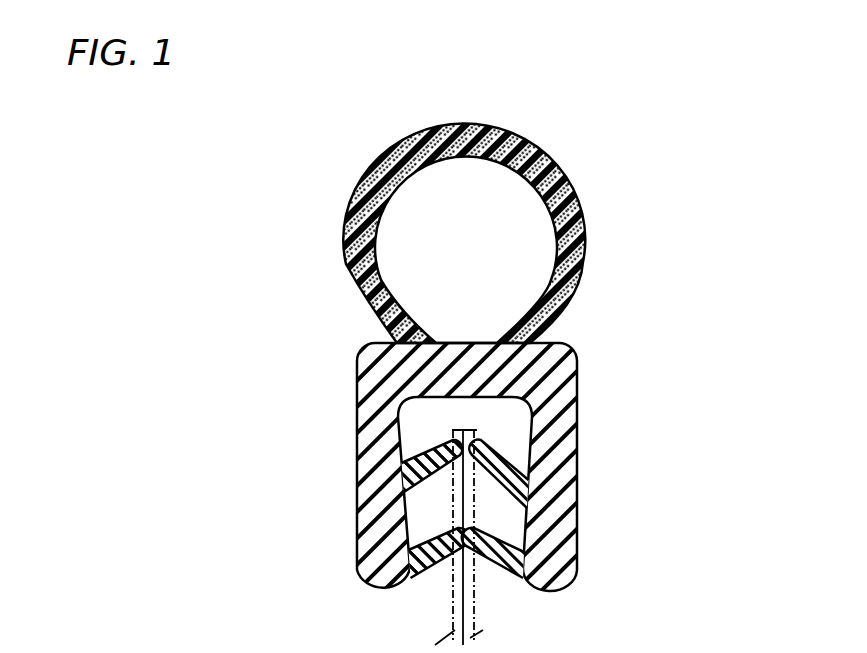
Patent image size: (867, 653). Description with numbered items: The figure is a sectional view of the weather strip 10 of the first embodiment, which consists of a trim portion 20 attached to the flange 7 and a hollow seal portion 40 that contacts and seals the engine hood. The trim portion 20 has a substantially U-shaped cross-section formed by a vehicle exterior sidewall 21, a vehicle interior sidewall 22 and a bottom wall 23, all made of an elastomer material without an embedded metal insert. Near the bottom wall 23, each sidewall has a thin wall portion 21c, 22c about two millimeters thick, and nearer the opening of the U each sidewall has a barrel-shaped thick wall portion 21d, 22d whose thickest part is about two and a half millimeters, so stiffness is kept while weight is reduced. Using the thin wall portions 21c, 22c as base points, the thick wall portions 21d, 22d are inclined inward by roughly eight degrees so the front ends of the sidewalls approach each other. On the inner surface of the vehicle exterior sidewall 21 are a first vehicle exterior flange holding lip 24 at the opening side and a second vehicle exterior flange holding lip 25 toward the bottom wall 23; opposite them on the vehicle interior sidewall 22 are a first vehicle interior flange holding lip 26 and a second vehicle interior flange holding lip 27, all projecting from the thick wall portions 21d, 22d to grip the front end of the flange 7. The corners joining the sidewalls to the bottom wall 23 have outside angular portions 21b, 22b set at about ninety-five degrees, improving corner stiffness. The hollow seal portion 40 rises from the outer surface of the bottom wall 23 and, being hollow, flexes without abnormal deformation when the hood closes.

The weather strip 10 is at (320, 170).
The hollow seal portion 40 is at (577, 200).
The trim portion 20 is at (340, 391).
The vehicle exterior sidewall 21 is at (357, 452).
The angular portion 21b is at (360, 362).
The thin wall portion 21c is at (386, 418).
The thick wall portion 21d is at (388, 523).
The vehicle interior sidewall 22 is at (575, 484).
The angular portion 22b is at (572, 370).
The thin wall portion 22c is at (550, 424).
The thick wall portion 22d is at (553, 535).
The bottom wall 23 is at (517, 351).
The first vehicle exterior flange holding lip 24 is at (430, 568).
The second vehicle exterior flange holding lip 25 is at (408, 466).
The first vehicle interior flange holding lip 26 is at (490, 568).
The second vehicle interior flange holding lip 27 is at (503, 463).
The flange 7 is at (468, 597).